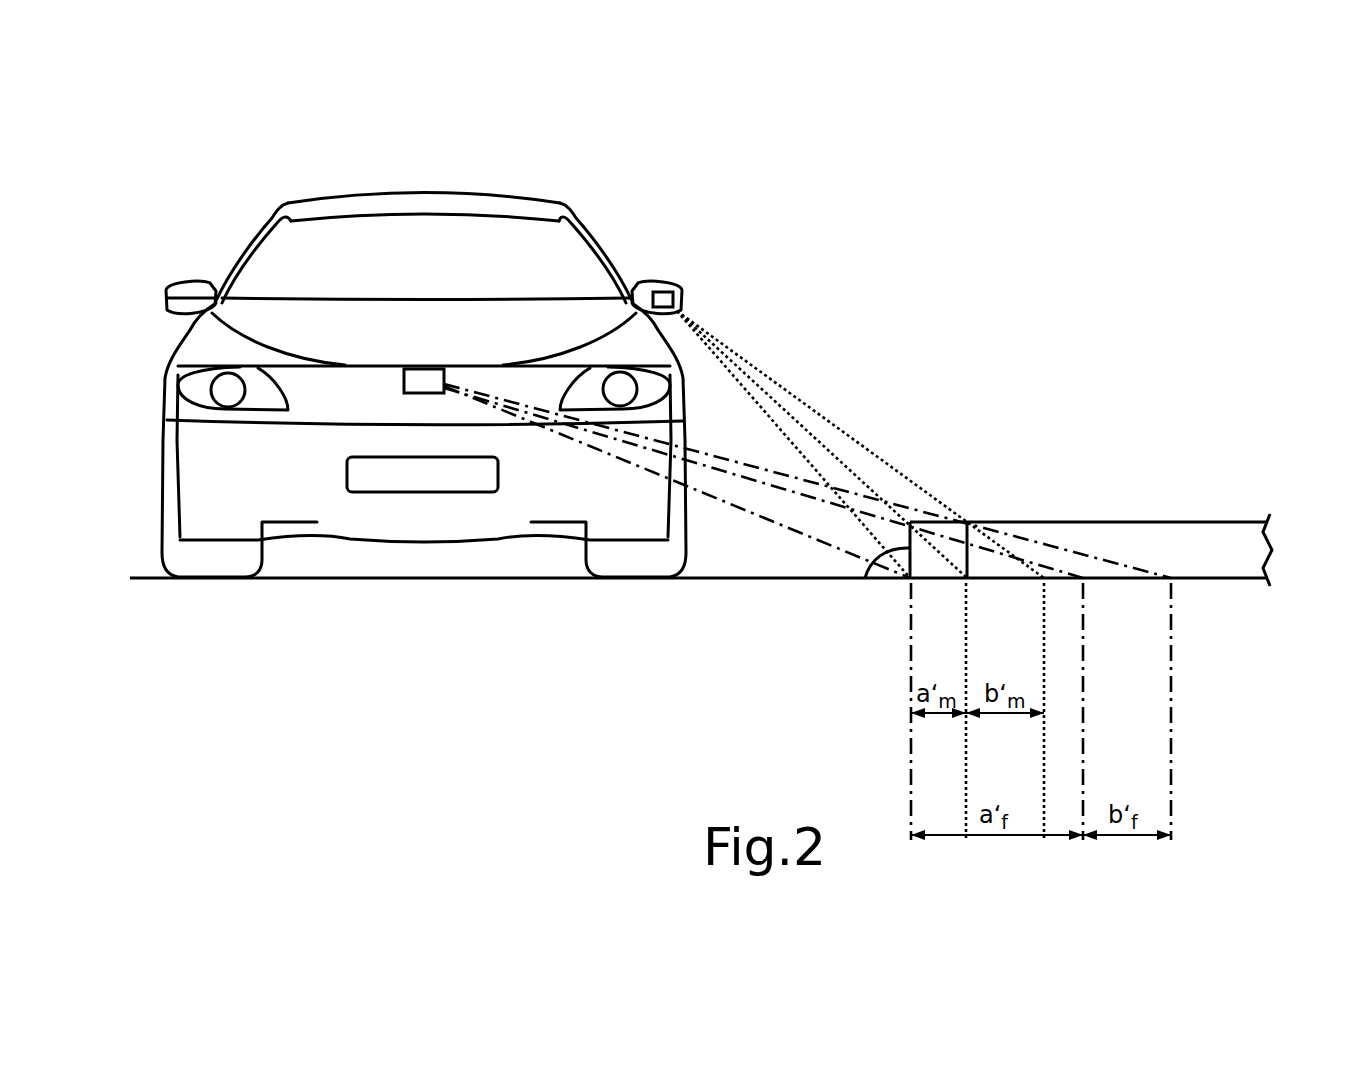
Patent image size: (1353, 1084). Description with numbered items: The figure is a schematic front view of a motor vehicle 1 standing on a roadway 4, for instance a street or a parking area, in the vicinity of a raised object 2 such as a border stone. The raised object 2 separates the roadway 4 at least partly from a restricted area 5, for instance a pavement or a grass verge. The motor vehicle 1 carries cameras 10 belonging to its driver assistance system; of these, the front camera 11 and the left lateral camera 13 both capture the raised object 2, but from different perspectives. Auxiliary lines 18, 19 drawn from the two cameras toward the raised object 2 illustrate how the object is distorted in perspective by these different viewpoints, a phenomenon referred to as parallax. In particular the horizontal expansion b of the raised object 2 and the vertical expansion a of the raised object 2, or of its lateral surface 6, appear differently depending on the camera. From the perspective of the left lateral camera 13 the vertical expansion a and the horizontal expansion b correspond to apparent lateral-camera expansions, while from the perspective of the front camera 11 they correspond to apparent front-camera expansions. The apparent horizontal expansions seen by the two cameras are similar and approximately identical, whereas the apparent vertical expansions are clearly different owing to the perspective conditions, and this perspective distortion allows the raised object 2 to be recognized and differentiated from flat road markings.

The motor vehicle 1 is at (352, 197).
The raised object 2 is at (940, 522).
The roadway 4 is at (474, 580).
The restricted area 5 is at (1143, 522).
The lateral surface 6 is at (883, 568).
The cameras 10 is at (625, 324).
The front camera 11 is at (418, 369).
The left lateral camera 13 is at (674, 297).
The auxiliary lines 18 is at (852, 420).
The auxiliary lines 19 is at (738, 538).
The vertical expansion a is at (897, 553).
The horizontal expansion b is at (925, 522).